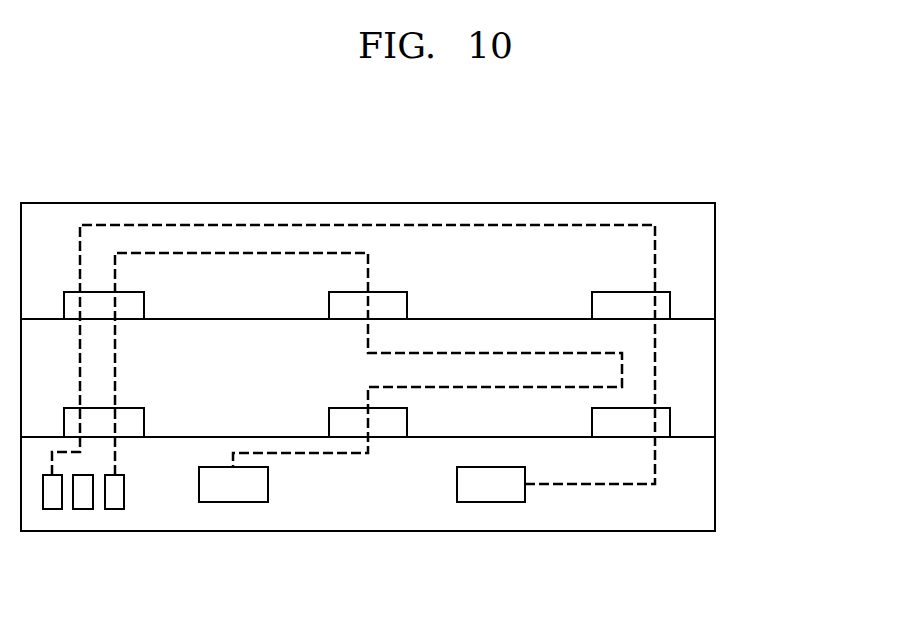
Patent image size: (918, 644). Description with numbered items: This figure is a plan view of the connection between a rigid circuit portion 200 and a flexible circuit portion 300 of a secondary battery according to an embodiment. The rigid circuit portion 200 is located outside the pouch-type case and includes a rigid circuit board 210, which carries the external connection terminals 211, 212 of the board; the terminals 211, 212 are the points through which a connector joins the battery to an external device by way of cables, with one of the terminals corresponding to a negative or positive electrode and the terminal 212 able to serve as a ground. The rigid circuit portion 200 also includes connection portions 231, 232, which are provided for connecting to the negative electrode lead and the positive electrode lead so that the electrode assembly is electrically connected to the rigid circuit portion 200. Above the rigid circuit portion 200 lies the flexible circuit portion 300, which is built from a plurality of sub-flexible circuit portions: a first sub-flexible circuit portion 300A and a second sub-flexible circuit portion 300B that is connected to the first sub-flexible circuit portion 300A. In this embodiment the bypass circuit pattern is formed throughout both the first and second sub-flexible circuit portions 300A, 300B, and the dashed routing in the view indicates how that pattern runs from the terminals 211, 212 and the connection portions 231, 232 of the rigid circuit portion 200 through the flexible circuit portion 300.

The rigid circuit portion 200 is at (423, 420).
The rigid circuit board 210 is at (662, 531).
The external connection terminal 211 is at (113, 507).
The external connection terminal 212 is at (51, 507).
The connection portion 231 is at (232, 493).
The connection portion 232 is at (492, 492).
The flexible circuit portion 300 is at (452, 320).
The first sub-flexible circuit portion 300A is at (422, 378).
The second sub-flexible circuit portion 300B is at (719, 251).